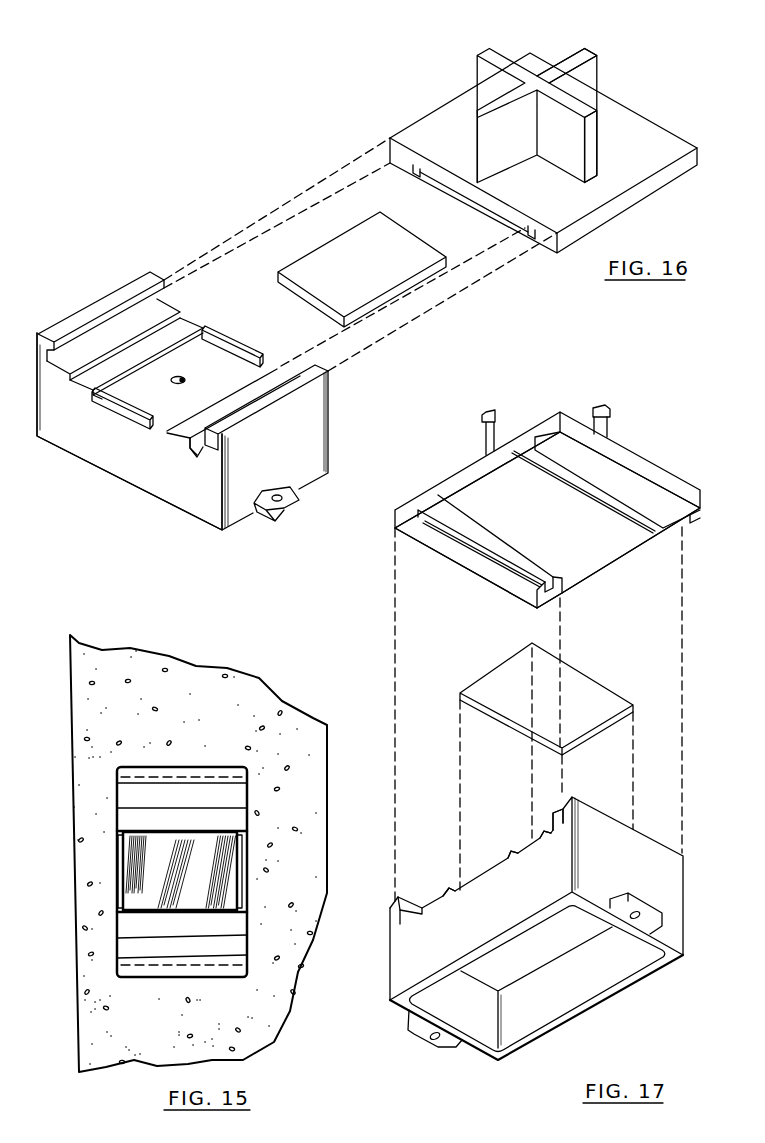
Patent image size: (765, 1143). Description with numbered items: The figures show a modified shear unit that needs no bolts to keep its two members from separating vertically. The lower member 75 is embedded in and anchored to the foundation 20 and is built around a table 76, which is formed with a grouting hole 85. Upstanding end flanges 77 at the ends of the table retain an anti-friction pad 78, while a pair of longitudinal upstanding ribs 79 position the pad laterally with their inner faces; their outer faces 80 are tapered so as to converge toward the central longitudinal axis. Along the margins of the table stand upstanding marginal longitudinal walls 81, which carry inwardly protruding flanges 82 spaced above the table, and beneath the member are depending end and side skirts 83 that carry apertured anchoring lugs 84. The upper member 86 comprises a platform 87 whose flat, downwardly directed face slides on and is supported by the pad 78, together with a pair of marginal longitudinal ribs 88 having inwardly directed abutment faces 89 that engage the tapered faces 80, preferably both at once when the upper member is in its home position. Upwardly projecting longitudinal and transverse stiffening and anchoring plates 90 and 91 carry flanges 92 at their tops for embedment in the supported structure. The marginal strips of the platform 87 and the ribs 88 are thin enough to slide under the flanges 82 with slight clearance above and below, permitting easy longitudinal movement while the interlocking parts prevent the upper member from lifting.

In FIG. 15, the foundation 20 is at (288, 1007).
In FIG. 16, the lower member 75 is at (333, 437).
In FIG. 17, the lower member 75 is at (688, 903).
In FIG. 15, the lower member 75 is at (241, 778).
In FIG. 16, the table 76 is at (127, 396).
In FIG. 16, the upstanding end flanges 77 is at (237, 340).
In FIG. 17, the upstanding end flanges 77 is at (477, 868).
In FIG. 15, the upstanding end flanges 77 is at (122, 865).
In FIG. 16, the anti-friction pad 78 is at (347, 269).
In FIG. 17, the anti-friction pad 78 is at (601, 683).
In FIG. 15, the anti-friction pad 78 is at (189, 862).
In FIG. 16, the longitudinal upstanding ribs 79 is at (192, 313).
In FIG. 17, the longitudinal upstanding ribs 79 is at (445, 892).
In FIG. 15, the longitudinal upstanding ribs 79 is at (203, 822).
In FIG. 16, the outer faces 80 is at (193, 447).
In FIG. 17, the outer faces 80 is at (543, 833).
In FIG. 15, the outer faces 80 is at (217, 803).
In FIG. 16, the upstanding marginal longitudinal walls 81 is at (36, 353).
In FIG. 17, the upstanding marginal longitudinal walls 81 is at (394, 912).
In FIG. 16, the inwardly protruding flanges 82 is at (115, 295).
In FIG. 17, the inwardly protruding flanges 82 is at (400, 895).
In FIG. 16, the depending end and side skirts 83 is at (160, 492).
In FIG. 17, the depending end and side skirts 83 is at (593, 908).
In FIG. 16, the apertured anchoring lugs 84 is at (298, 500).
In FIG. 17, the apertured anchoring lugs 84 is at (415, 1037).
In FIG. 16, the grouting hole 85 is at (185, 376).
In FIG. 16, the upper member 86 is at (678, 135).
In FIG. 17, the upper member 86 is at (687, 477).
In FIG. 16, the platform 87 is at (633, 120).
In FIG. 17, the platform 87 is at (519, 511).
In FIG. 16, the marginal longitudinal ribs 88 is at (403, 163).
In FIG. 17, the marginal longitudinal ribs 88 is at (688, 513).
In FIG. 16, the abutment faces 89 is at (418, 174).
In FIG. 17, the abutment faces 89 is at (540, 582).
In FIG. 16, the longitudinal stiffening and anchoring plate 90 is at (593, 87).
In FIG. 17, the longitudinal stiffening and anchoring plate 90 is at (487, 442).
In FIG. 16, the transverse stiffening and anchoring plate 91 is at (600, 167).
In FIG. 17, the transverse stiffening and anchoring plate 91 is at (610, 430).
In FIG. 16, the flanges 92 is at (590, 52).
In FIG. 17, the flanges 92 is at (610, 408).